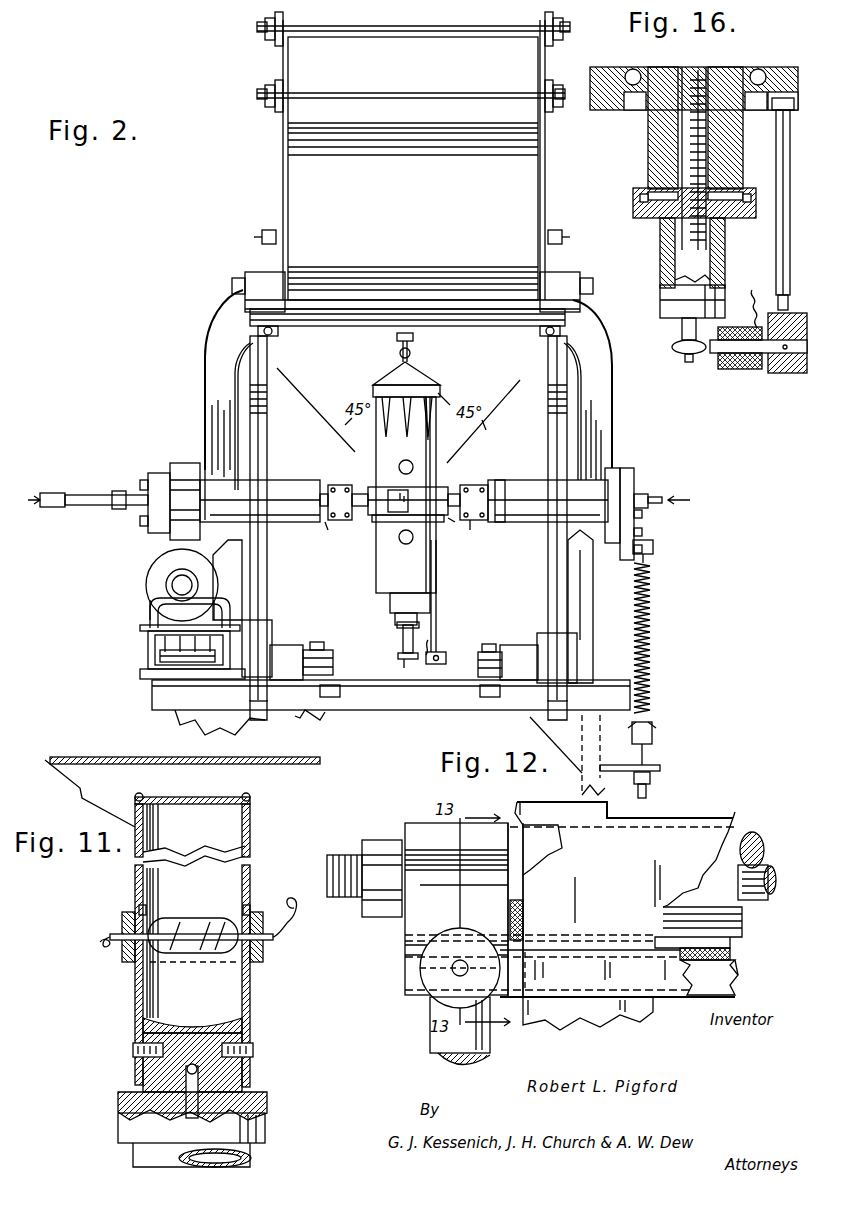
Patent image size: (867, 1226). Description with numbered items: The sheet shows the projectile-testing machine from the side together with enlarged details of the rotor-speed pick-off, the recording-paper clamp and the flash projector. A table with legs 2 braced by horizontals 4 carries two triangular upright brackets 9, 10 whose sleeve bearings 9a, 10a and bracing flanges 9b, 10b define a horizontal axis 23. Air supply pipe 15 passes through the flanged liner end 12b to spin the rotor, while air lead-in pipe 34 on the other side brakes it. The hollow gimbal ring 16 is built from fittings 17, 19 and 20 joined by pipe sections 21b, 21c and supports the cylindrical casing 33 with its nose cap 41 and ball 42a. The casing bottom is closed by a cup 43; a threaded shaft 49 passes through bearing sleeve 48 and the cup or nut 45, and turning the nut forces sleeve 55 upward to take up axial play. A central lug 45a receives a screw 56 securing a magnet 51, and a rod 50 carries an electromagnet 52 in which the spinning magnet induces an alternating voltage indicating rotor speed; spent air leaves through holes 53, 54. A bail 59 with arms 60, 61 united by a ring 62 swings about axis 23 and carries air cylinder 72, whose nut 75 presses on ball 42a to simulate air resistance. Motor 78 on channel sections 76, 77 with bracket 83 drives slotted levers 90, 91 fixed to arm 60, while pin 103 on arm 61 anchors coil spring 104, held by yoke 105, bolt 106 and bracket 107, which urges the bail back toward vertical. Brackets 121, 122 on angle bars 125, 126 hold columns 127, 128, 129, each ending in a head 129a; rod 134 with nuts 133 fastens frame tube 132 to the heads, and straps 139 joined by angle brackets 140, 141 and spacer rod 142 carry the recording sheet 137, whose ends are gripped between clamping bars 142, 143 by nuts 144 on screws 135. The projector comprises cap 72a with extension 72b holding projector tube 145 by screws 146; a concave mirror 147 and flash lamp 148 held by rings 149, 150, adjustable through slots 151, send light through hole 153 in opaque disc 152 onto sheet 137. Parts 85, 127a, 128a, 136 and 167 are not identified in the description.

In FIG. 2, the leg 2 is at (606, 782).
In FIG. 2, the horizontal brace member 4 is at (418, 705).
In FIG. 2, the upright bracket 9 is at (528, 590).
In FIG. 2, the sleeve bearing 9a is at (515, 484).
In FIG. 2, the bracing flange 9b is at (585, 602).
In FIG. 2, the upright bracket 10 is at (285, 584).
In FIG. 2, the sleeve bearing 10a is at (285, 482).
In FIG. 2, the bracing flange 10b is at (280, 608).
In FIG. 2, the flanged outer end of liner 12b is at (635, 485).
In FIG. 2, the air supply pipe 15 is at (656, 498).
In FIG. 2, the gimbal ring 16 is at (476, 524).
In FIG. 2, the fitting 17 is at (472, 484).
In FIG. 2, the fitting 19 is at (335, 522).
In FIG. 2, the fitting 20 is at (402, 522).
In FIG. 2, the pipe section 21b is at (350, 484).
In FIG. 2, the pipe section 21c is at (452, 522).
In FIG. 2, the outer axis 23 is at (572, 488).
In FIG. 2, the casing 33 is at (378, 575).
In FIG. 2, the air lead-in pipe 34 is at (148, 500).
In FIG. 2, the nose cap 41 is at (437, 380).
In FIG. 2, the ball 42a is at (400, 354).
In FIG. 2, the cup 43 is at (395, 607).
In FIG. 16, the cup 43 is at (600, 110).
In FIG. 2, the cup or nut 45 is at (403, 636).
In FIG. 16, the cup or nut 45 is at (665, 262).
In FIG. 16, the central lug 45a is at (682, 326).
In FIG. 16, the bearing sleeve 48 is at (725, 160).
In FIG. 16, the threaded shaft 49 is at (688, 157).
In FIG. 2, the rod 50 is at (436, 612).
In FIG. 16, the rod 50 is at (780, 248).
In FIG. 2, the magnet 51 is at (406, 660).
In FIG. 16, the magnet 51 is at (680, 352).
In FIG. 2, the electromagnet 52 is at (434, 664).
In FIG. 16, the electromagnet 52 is at (740, 370).
In FIG. 2, the holes 53 is at (404, 462).
In FIG. 2, the holes 54 is at (406, 544).
In FIG. 16, the sleeve 55 is at (648, 180).
In FIG. 16, the screw 56 is at (689, 362).
In FIG. 2, the bail 59 is at (207, 336).
In FIG. 2, the arm 60 is at (212, 395).
In FIG. 2, the arm 61 is at (606, 390).
In FIG. 2, the ring 62 is at (345, 322).
In FIG. 11, the air cylinder 72 is at (133, 1160).
In FIG. 11, the cap 72a is at (268, 1102).
In FIG. 11, the upward extension 72b is at (242, 1072).
In FIG. 2, the nut 75 is at (414, 338).
In FIG. 2, the channel section 76 is at (152, 672).
In FIG. 2, the channel section 77 is at (148, 648).
In FIG. 2, the motor 78 is at (146, 583).
In FIG. 2, the U-shaped bracket 83 is at (148, 614).
In FIG. 2, the motor slab 85 is at (185, 660).
In FIG. 2, the lever 90 is at (170, 470).
In FIG. 2, the lever 91 is at (200, 470).
In FIG. 2, the pin 103 is at (654, 548).
In FIG. 2, the coil spring 104 is at (652, 630).
In FIG. 2, the yoke 105 is at (652, 740).
In FIG. 2, the bolt 106 is at (652, 790).
In FIG. 2, the bracket 107 is at (620, 760).
In FIG. 2, the bracket 121 is at (293, 672).
In FIG. 2, the bracket 122 is at (535, 675).
In FIG. 2, the angle bar 125 is at (320, 652).
In FIG. 2, the angle member 126 is at (503, 650).
In FIG. 2, the column 127 is at (262, 418).
In FIG. 2, the left bearing block 127a is at (258, 275).
In FIG. 2, the column 128 is at (555, 425).
In FIG. 2, the right bearing block 128a is at (575, 268).
In FIG. 12, the column 129 is at (432, 1040).
In FIG. 12, the head 129a is at (410, 925).
In FIG. 12, the tube 132 is at (738, 832).
In FIG. 12, the nut 133 is at (375, 848).
In FIG. 2, the rod 134 is at (232, 286).
In FIG. 12, the rod 134 is at (752, 902).
In FIG. 12, the screw 135 is at (452, 970).
In FIG. 2, the drum frame 136 is at (276, 176).
In FIG. 2, the recording sheet 137 is at (428, 221).
In FIG. 11, the recording sheet 137 is at (296, 772).
In FIG. 12, the recording sheet 137 is at (673, 897).
In FIG. 12, the arcuate strap 139 is at (538, 808).
In FIG. 2, the angle bracket 140 is at (276, 44).
In FIG. 2, the angle bracket 141 is at (551, 40).
In FIG. 2, the paper-clamping bar 142 is at (375, 29).
In FIG. 12, the paper-clamping bar 142 is at (733, 968).
In FIG. 12, the clamping bar 143 is at (567, 992).
In FIG. 2, the nut 144 is at (272, 333).
In FIG. 12, the nut 144 is at (440, 995).
In FIG. 11, the projector tube 145 is at (135, 990).
In FIG. 11, the screw 146 is at (253, 1042).
In FIG. 11, the concave mirror 147 is at (192, 1020).
In FIG. 11, the flash lamp 148 is at (222, 955).
In FIG. 11, the mounting ring 149 is at (262, 946).
In FIG. 11, the mounting ring 150 is at (122, 918).
In FIG. 11, the slot 151 is at (137, 908).
In FIG. 11, the opaque disc 152 is at (235, 823).
In FIG. 11, the central hole 153 is at (195, 802).
In FIG. 2, the guide vane 167 is at (435, 425).